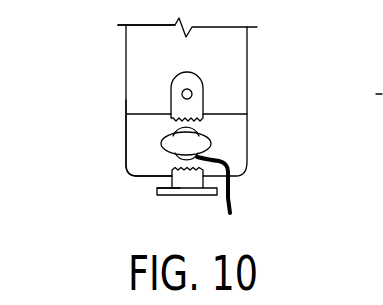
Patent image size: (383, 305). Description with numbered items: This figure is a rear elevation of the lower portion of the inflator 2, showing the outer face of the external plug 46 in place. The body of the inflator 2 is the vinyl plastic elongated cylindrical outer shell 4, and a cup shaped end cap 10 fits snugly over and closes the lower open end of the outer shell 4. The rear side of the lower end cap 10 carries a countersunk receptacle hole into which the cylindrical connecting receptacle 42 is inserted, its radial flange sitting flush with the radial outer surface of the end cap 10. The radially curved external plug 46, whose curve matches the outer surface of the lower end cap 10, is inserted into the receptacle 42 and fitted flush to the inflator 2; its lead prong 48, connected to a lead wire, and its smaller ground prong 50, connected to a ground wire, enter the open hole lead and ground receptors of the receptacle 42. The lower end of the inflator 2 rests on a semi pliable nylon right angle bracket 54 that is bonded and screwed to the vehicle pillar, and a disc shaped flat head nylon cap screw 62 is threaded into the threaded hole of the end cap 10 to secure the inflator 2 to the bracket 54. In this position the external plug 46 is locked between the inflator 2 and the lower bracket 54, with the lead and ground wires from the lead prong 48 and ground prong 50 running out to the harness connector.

The inflator 2 is at (113, 72).
The outer shell 4 is at (123, 43).
The end cap 10 is at (123, 150).
The right angle bracket 54 is at (172, 168).
The connecting receptacle 42 is at (200, 131).
The external plug 46 is at (216, 143).
The ground prong 50 is at (313, 191).
The lead prong 48 is at (216, 204).
The cap screw 62 is at (157, 192).